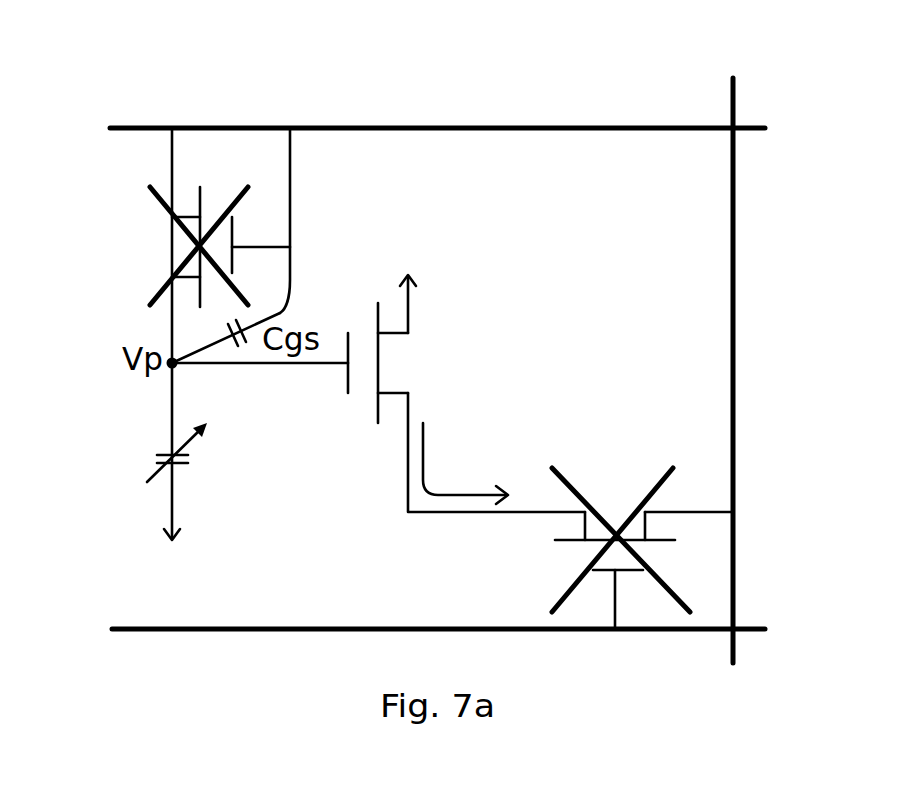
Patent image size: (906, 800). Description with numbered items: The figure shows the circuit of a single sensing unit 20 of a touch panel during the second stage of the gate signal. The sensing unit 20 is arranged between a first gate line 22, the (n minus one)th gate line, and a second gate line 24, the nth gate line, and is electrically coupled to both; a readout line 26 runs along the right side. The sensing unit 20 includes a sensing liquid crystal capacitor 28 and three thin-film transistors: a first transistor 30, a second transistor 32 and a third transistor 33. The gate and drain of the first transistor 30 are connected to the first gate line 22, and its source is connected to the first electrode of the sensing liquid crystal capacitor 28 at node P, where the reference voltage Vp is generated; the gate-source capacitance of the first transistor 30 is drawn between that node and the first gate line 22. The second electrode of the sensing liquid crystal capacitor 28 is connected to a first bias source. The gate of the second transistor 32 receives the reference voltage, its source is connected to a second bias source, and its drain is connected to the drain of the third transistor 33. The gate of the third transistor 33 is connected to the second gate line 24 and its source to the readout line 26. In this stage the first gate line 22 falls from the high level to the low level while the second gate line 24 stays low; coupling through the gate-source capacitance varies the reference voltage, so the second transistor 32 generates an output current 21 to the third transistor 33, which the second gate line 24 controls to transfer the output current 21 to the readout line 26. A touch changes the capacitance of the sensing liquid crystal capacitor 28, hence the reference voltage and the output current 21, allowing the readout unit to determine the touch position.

The sensing unit 20 is at (565, 247).
The output current 21 is at (465, 463).
The first gate line 22 is at (408, 127).
The second gate line 24 is at (175, 633).
The readout line 26 is at (728, 645).
The sensing liquid crystal capacitor 28 is at (153, 453).
The first transistor 30 is at (142, 223).
The second transistor 32 is at (407, 357).
The third transistor 33 is at (588, 485).